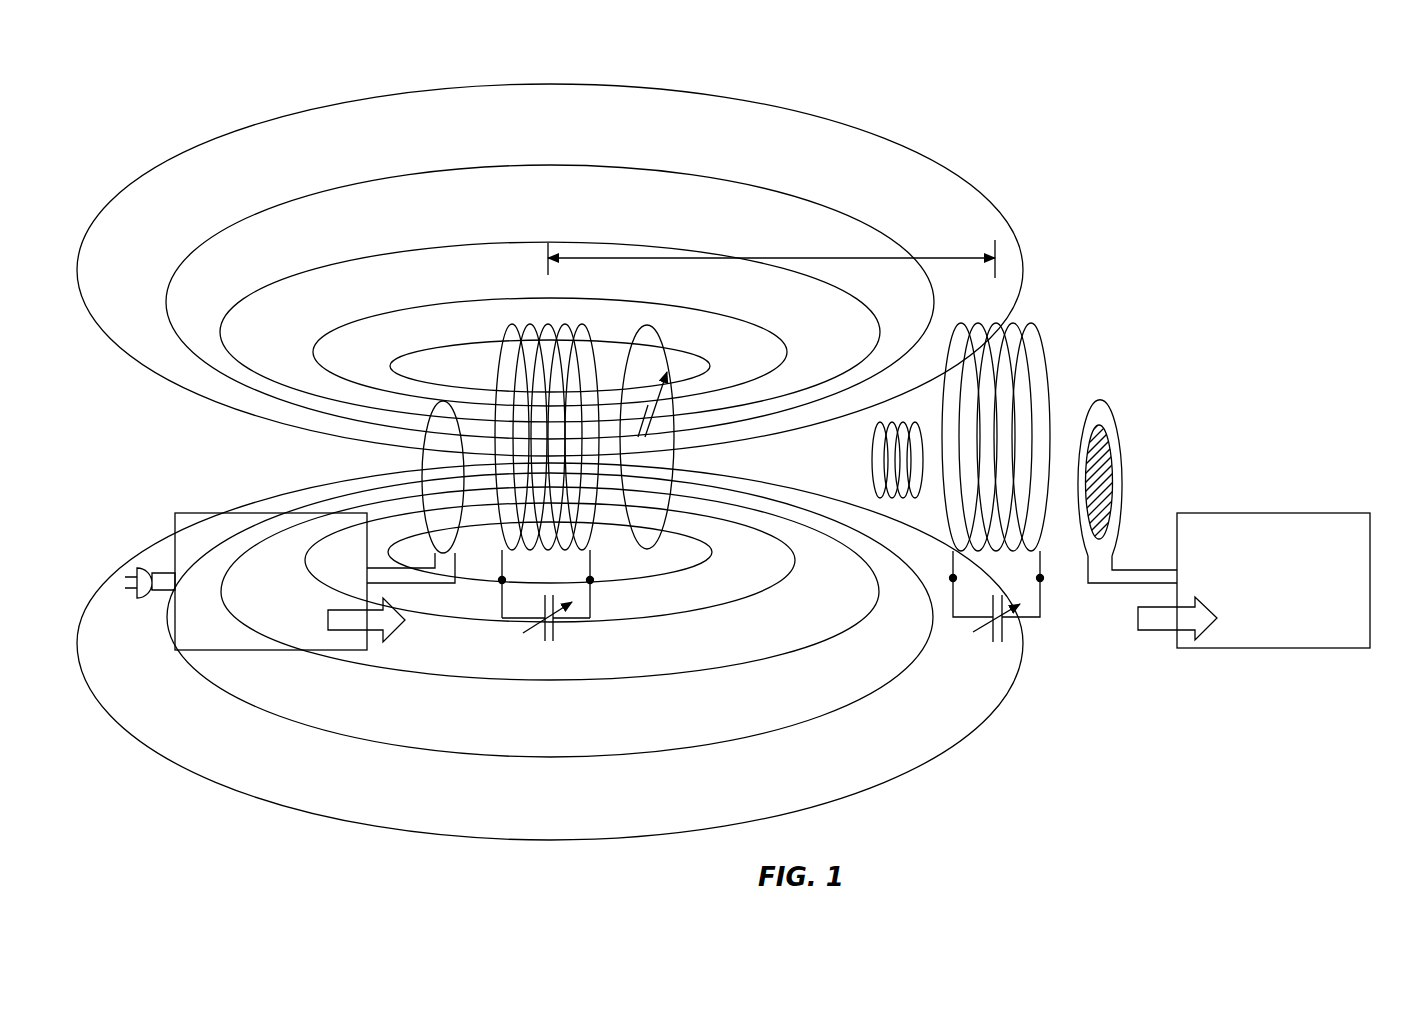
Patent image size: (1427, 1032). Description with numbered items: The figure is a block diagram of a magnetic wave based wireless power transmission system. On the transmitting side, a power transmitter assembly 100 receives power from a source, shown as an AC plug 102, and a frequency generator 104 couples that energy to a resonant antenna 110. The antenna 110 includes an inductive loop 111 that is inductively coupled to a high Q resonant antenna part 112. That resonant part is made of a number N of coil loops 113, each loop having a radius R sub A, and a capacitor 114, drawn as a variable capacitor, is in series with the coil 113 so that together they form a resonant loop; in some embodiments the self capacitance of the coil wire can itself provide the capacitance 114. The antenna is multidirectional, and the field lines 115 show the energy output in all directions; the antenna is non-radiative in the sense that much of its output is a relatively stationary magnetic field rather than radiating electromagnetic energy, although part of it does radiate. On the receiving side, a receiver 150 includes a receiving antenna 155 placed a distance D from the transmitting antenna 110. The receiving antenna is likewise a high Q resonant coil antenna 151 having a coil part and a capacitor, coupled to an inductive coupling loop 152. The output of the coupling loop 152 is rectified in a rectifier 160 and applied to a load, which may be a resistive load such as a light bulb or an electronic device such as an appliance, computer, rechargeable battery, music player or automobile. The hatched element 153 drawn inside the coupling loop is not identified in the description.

The power transmitter assembly 100 is at (221, 118).
The AC plug 102 is at (141, 569).
The frequency generator 104 is at (203, 512).
The antenna 110 is at (529, 509).
The inductive loop 111 is at (443, 402).
The high Q resonant antenna part 112 is at (568, 323).
The coil loops 113 is at (597, 336).
The capacitor 114 is at (569, 628).
The energy output 115 is at (797, 721).
The receiver 150 is at (1138, 266).
The high Q resonant coil antenna 151 is at (952, 598).
The inductive coupling loop 152 is at (1083, 478).
The coupling loop core cross-section 153 is at (1112, 482).
The receiving antenna 155 is at (871, 447).
The rectifier 160 is at (1347, 513).